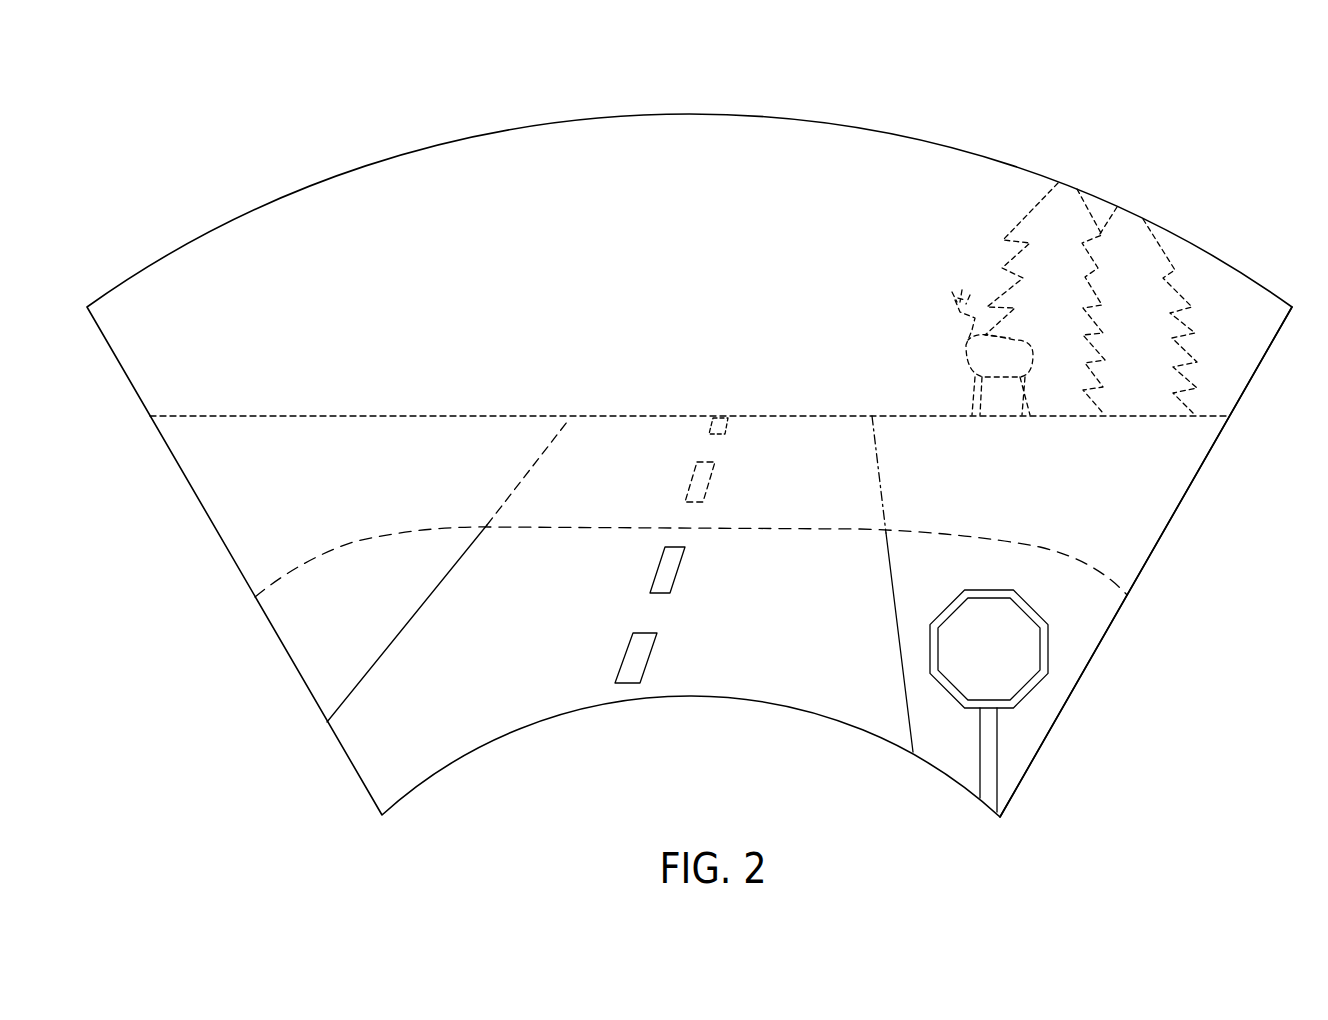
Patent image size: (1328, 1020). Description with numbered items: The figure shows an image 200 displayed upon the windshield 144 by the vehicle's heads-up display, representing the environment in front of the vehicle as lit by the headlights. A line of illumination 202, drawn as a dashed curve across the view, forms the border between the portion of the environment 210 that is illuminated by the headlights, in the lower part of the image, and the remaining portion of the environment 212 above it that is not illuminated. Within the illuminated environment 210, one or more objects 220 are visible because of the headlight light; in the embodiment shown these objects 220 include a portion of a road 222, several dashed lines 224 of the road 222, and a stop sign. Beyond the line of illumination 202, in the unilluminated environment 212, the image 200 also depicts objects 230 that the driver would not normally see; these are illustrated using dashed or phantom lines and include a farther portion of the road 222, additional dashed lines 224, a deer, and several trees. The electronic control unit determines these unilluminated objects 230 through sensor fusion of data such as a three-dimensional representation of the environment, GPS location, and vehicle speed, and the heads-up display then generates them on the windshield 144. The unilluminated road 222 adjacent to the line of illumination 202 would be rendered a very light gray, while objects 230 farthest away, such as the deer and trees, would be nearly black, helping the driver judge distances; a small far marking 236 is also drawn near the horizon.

The image 200 is at (960, 133).
The windshield 144 is at (1247, 390).
The remaining portion of the environment 212 is at (442, 350).
The portion of the environment 210 is at (487, 686).
The road 222 is at (878, 497).
The line of illumination 202 is at (355, 542).
The objects 220 is at (657, 647).
The dashed lines 224 is at (713, 480).
The distant lane marking 236 is at (727, 408).
The objects 230 is at (1020, 193).